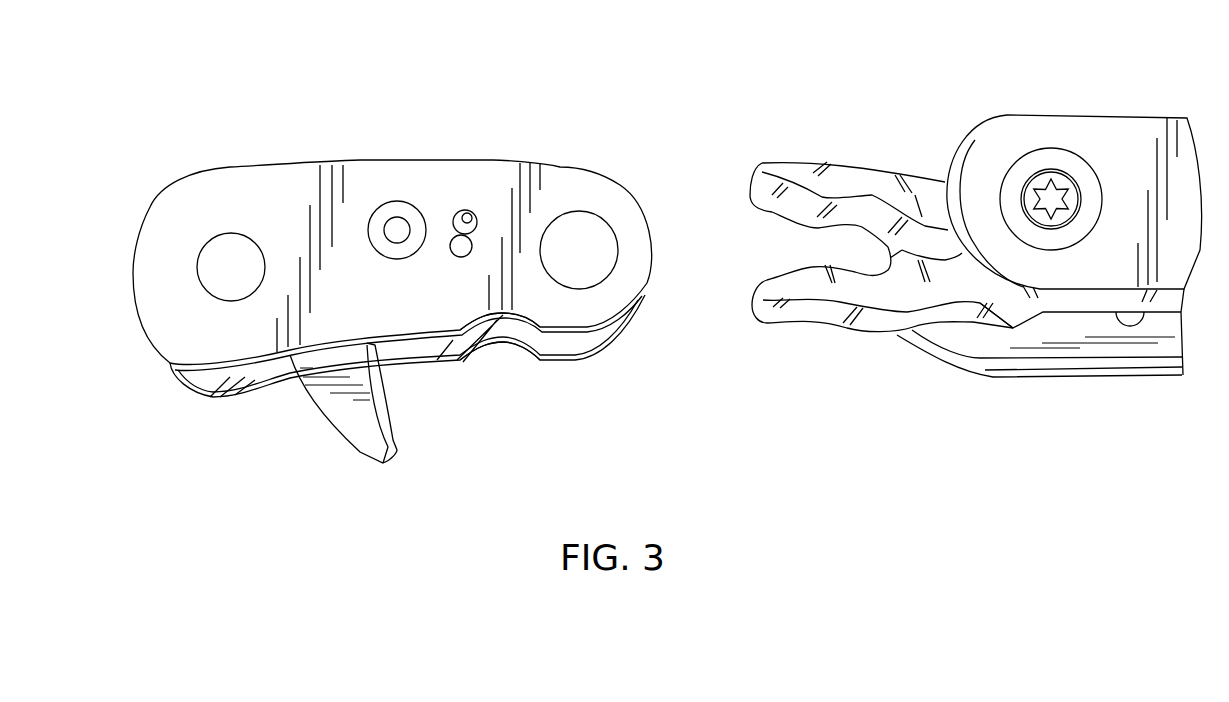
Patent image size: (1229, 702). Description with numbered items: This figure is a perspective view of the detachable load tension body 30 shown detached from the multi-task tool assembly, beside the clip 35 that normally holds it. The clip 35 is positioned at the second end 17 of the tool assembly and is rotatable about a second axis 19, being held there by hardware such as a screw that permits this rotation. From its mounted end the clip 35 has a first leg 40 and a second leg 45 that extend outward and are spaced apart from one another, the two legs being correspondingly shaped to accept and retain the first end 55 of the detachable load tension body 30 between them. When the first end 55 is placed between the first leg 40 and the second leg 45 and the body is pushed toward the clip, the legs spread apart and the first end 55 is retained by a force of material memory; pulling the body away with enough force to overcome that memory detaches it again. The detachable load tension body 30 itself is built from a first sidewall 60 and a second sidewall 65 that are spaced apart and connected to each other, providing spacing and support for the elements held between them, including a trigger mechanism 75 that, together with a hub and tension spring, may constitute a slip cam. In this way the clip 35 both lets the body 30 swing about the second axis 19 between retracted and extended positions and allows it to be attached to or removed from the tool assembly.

The detachable load tension body 30 is at (508, 112).
The first sidewall 60 is at (295, 180).
The first end 55 is at (583, 225).
The second sidewall 65 is at (430, 345).
The trigger mechanism 75 is at (358, 422).
The clip 35 is at (892, 360).
The second end 17 is at (1023, 128).
The second axis 19 is at (1070, 190).
The first leg 40 is at (800, 172).
The second leg 45 is at (810, 290).